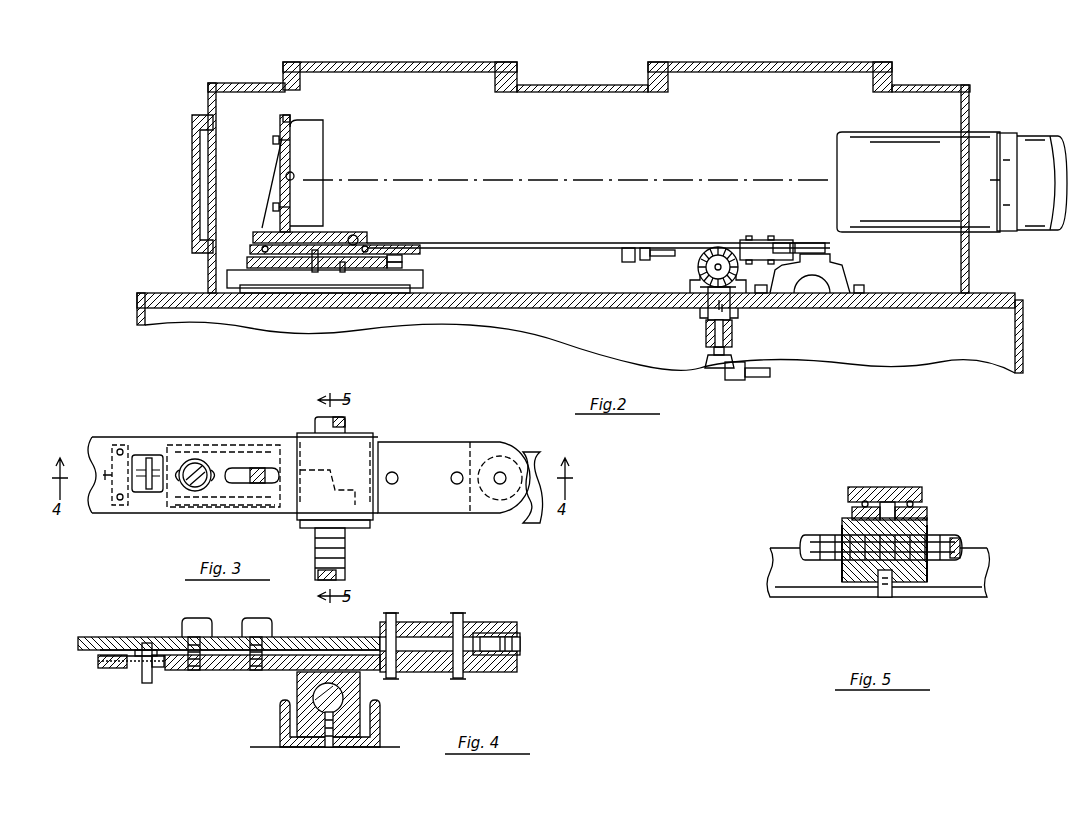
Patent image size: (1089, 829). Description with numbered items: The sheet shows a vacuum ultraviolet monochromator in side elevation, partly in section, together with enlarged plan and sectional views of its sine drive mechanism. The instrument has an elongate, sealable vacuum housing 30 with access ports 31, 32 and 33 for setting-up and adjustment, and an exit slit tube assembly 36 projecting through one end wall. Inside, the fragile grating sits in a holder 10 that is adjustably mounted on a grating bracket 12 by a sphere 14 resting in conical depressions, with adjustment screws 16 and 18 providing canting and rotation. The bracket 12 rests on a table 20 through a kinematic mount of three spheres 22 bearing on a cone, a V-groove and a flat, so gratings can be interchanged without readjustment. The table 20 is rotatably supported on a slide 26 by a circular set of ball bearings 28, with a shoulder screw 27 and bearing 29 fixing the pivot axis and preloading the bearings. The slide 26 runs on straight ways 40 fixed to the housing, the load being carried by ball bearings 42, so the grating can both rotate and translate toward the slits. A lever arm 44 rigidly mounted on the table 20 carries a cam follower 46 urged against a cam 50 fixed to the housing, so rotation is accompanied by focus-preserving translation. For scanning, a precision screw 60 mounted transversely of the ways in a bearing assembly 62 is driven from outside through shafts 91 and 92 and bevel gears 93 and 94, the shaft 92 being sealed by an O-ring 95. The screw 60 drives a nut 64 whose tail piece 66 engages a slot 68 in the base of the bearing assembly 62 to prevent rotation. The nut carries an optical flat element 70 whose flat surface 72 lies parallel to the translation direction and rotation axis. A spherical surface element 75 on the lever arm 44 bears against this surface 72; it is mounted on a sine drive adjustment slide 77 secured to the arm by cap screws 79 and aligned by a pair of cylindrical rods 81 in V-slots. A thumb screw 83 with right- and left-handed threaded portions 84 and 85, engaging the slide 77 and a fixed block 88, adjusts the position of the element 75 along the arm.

In FIG. 2, the holder 10 is at (320, 127).
In FIG. 2, the grating bracket 12 is at (262, 200).
In FIG. 2, the sphere 14 is at (295, 170).
In FIG. 2, the adjustment screw 16 is at (275, 140).
In FIG. 2, the adjustment screw 18 is at (283, 118).
In FIG. 2, the table 20 is at (262, 243).
In FIG. 2, the spheres 22 is at (357, 238).
In FIG. 2, the slide 26 is at (425, 247).
In FIG. 2, the shoulder screw 27 is at (315, 270).
In FIG. 2, the ball bearings 28 is at (250, 258).
In FIG. 2, the bearing 29 is at (342, 270).
In FIG. 2, the housing 30 is at (567, 67).
In FIG. 2, the access port 31 is at (192, 200).
In FIG. 2, the access port 32 is at (455, 62).
In FIG. 2, the access port 33 is at (778, 62).
In FIG. 2, the exit slit tube assembly 36 is at (985, 133).
In FIG. 2, the straight ways 40 is at (423, 278).
In FIG. 2, the ball bearings 42 is at (395, 262).
In FIG. 2, the lever arm 44 is at (545, 243).
In FIG. 3, the lever arm 44 is at (105, 437).
In FIG. 4, the lever arm 44 is at (122, 636).
In FIG. 5, the lever arm 44 is at (875, 487).
In FIG. 2, the cam follower 46 is at (780, 245).
In FIG. 3, the cam follower 46 is at (510, 513).
In FIG. 4, the cam follower 46 is at (520, 648).
In FIG. 2, the cam 50 is at (835, 252).
In FIG. 3, the cam 50 is at (530, 523).
In FIG. 3, the precision screw 60 is at (345, 565).
In FIG. 5, the precision screw 60 is at (945, 540).
In FIG. 4, the bearing assembly 62 is at (392, 714).
In FIG. 5, the bearing assembly 62 is at (978, 536).
In FIG. 3, the nut 64 is at (373, 520).
In FIG. 4, the nut 64 is at (297, 695).
In FIG. 5, the nut 64 is at (843, 528).
In FIG. 5, the tail piece 66 is at (892, 590).
In FIG. 4, the slot 68 is at (330, 748).
In FIG. 4, the optical flat element 70 is at (375, 675).
In FIG. 5, the optical flat element 70 is at (928, 518).
In FIG. 3, the optically flat surface 72 is at (385, 488).
In FIG. 3, the spherical surface element 75 is at (330, 470).
In FIG. 2, the sine drive adjustment slide 77 is at (660, 262).
In FIG. 4, the sine drive adjustment slide 77 is at (242, 670).
In FIG. 5, the sine drive adjustment slide 77 is at (855, 509).
In FIG. 3, the cap screws 79 is at (205, 466).
In FIG. 4, the cap screws 79 is at (192, 620).
In FIG. 3, the cylindrical rods 81 is at (196, 513).
In FIG. 5, the cylindrical rods 81 is at (915, 507).
In FIG. 3, the thumb screw 83 is at (148, 458).
In FIG. 4, the thumb screw 83 is at (148, 685).
In FIG. 4, the right-handed threaded portion 84 is at (158, 668).
In FIG. 4, the left-handed threaded portion 85 is at (140, 670).
In FIG. 4, the fixed block 88 is at (108, 668).
In FIG. 2, the shaft 91 is at (762, 378).
In FIG. 2, the shaft 92 is at (732, 315).
In FIG. 2, the bevel gear 93 is at (724, 372).
In FIG. 2, the bevel gear 94 is at (706, 290).
In FIG. 2, the O-ring 95 is at (734, 340).